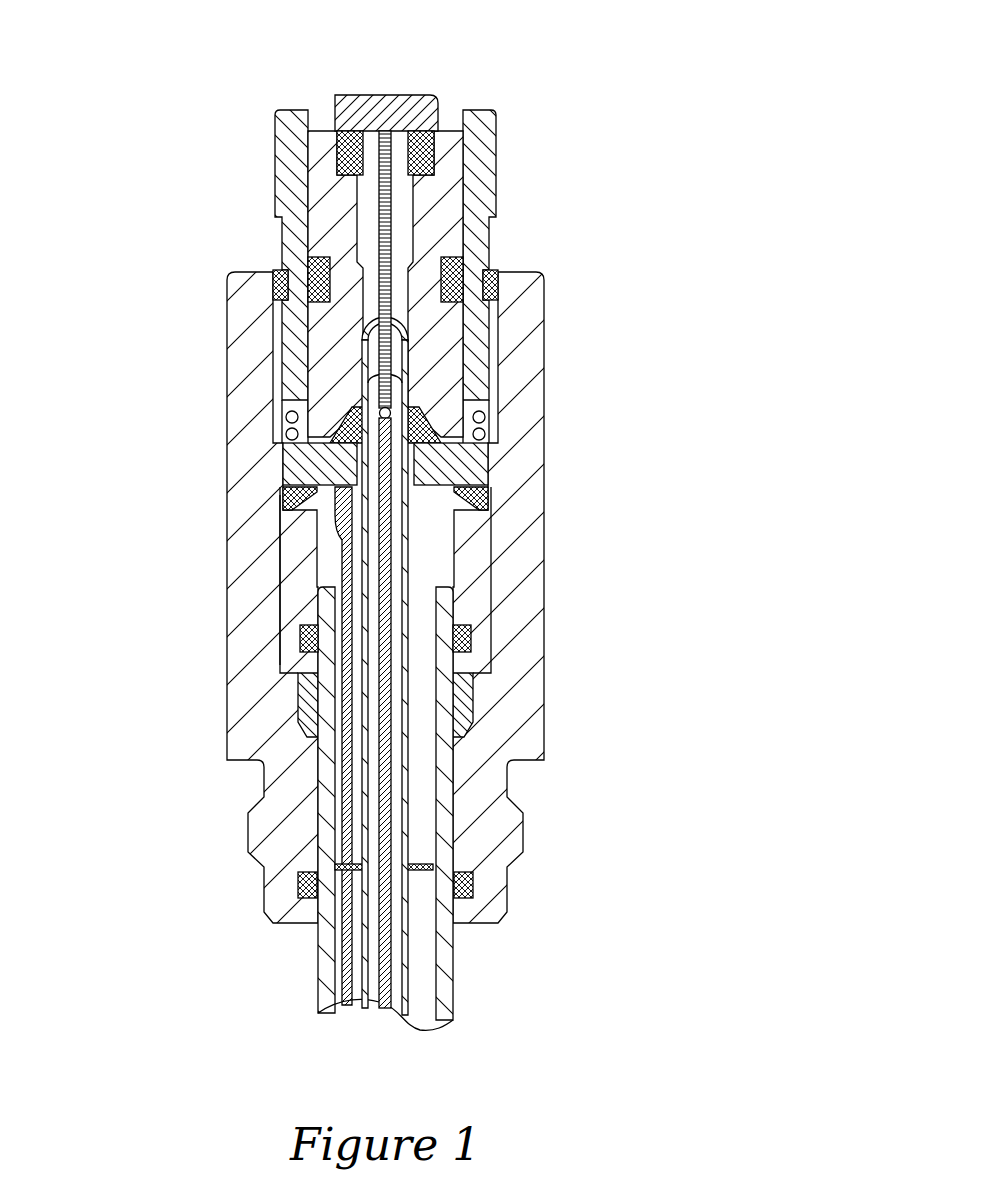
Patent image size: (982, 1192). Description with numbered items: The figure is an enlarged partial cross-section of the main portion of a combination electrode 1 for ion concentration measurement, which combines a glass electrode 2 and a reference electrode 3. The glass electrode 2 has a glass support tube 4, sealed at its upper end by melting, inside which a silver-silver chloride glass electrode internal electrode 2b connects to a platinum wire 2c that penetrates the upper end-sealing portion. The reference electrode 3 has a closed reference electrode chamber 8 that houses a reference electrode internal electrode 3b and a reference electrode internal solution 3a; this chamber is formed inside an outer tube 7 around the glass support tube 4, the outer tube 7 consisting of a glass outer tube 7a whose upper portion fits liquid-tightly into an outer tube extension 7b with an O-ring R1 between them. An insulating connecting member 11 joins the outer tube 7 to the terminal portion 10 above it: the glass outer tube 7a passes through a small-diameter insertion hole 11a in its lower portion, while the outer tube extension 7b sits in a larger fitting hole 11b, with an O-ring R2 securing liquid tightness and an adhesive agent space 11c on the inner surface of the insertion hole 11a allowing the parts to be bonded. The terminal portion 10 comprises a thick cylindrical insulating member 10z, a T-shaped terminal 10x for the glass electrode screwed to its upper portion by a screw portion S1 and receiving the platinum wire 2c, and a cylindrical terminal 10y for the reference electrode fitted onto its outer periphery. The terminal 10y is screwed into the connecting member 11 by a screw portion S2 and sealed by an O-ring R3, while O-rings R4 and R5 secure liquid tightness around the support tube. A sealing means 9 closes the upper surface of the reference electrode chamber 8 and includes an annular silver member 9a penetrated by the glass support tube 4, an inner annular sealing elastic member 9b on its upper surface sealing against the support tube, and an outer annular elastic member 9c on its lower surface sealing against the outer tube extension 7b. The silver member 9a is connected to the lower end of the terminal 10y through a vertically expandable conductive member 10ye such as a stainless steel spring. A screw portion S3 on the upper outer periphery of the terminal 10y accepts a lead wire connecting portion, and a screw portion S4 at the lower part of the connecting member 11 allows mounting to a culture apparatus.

The combination electrode 1 is at (460, 77).
The glass electrode 2 is at (509, 646).
The glass electrode internal electrode 2b is at (384, 625).
The platinum wire 2c is at (386, 343).
The reference electrode 3 is at (370, 758).
The reference electrode internal solution 3a is at (420, 933).
The reference electrode internal electrode 3b is at (350, 762).
The glass support tube 4 is at (405, 575).
The outer tube 7 is at (274, 765).
The glass outer tube 7a is at (327, 668).
The outer tube extension 7b is at (297, 595).
The reference electrode chamber 8 is at (417, 758).
The sealing means 9 is at (287, 449).
The annular silver member 9a is at (330, 468).
The annular sealing elastic member 9b is at (338, 433).
The annular elastic member 9c is at (300, 497).
The terminal portion 10 is at (375, 254).
The terminal for a glass electrode 10x is at (357, 106).
The terminal for a reference electrode 10y is at (283, 152).
The conductive member 10ye is at (487, 417).
The insulating member 10z is at (323, 198).
The connecting member 11 is at (252, 367).
The insertion hole 11a is at (453, 847).
The fitting hole 11b is at (280, 535).
The adhesive agent space 11c is at (465, 697).
The O-ring R1 is at (458, 638).
The O-ring R2 is at (302, 886).
The O-ring R3 is at (495, 283).
The O-ring R4 is at (423, 147).
The O-ring R5 is at (457, 267).
The screw portion S1 is at (465, 213).
The screw portion S2 is at (493, 372).
The screw portion S3 is at (493, 240).
The screw portion S4 is at (255, 832).